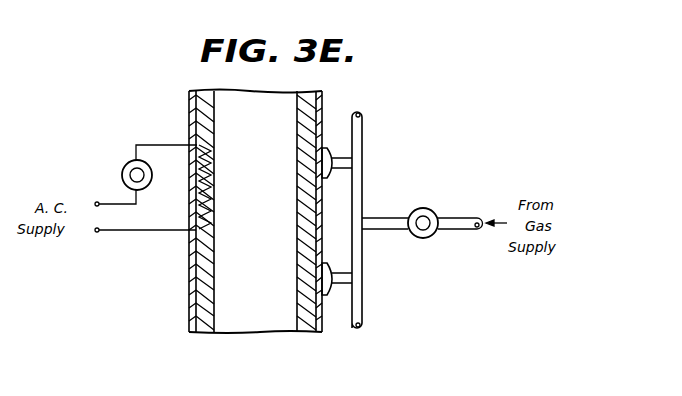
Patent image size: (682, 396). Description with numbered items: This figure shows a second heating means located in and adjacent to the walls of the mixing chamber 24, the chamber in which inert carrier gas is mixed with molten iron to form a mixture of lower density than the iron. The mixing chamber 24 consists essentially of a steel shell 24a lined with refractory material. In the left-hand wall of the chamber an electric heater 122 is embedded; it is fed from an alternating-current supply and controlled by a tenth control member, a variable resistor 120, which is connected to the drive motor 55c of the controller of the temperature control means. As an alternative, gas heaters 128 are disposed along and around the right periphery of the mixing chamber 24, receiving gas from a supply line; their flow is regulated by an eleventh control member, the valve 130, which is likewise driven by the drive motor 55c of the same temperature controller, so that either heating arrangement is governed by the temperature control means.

The mixing chamber 24 is at (188, 105).
The steel shell 24a is at (191, 312).
The variable resistor 120 is at (127, 160).
The drive motor 55c is at (122, 175).
The electric heater 122 is at (215, 198).
The gas heaters 128 is at (332, 145).
The valve 130 is at (425, 207).